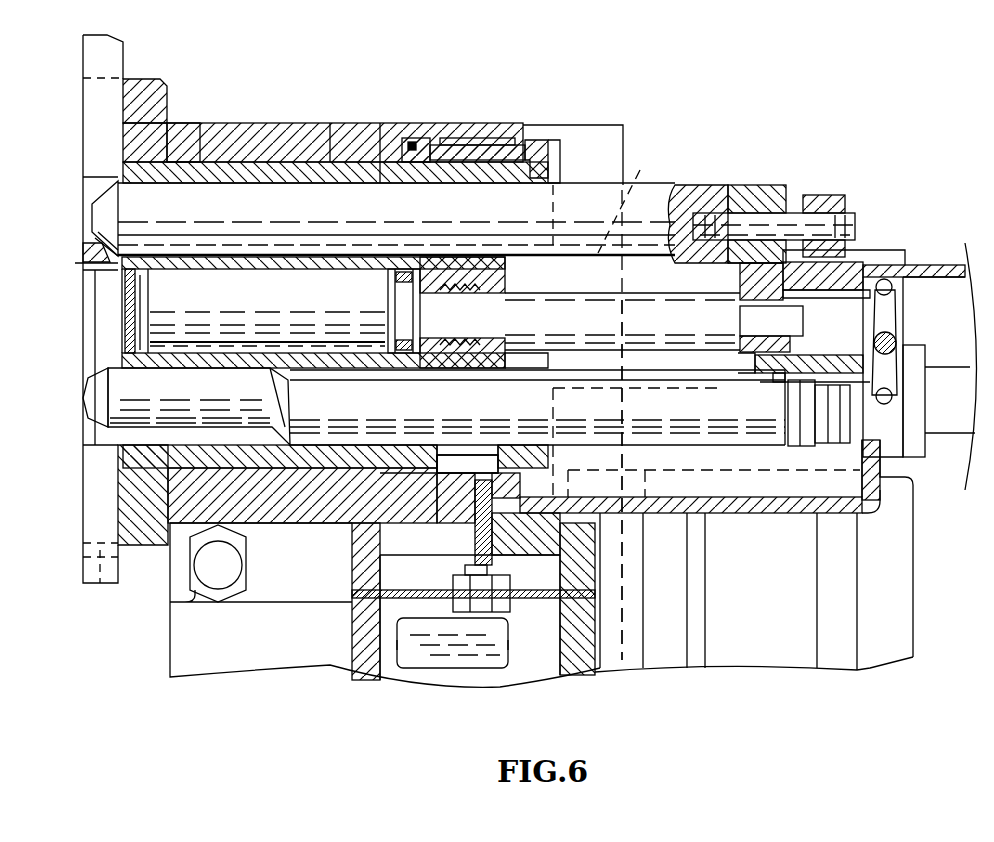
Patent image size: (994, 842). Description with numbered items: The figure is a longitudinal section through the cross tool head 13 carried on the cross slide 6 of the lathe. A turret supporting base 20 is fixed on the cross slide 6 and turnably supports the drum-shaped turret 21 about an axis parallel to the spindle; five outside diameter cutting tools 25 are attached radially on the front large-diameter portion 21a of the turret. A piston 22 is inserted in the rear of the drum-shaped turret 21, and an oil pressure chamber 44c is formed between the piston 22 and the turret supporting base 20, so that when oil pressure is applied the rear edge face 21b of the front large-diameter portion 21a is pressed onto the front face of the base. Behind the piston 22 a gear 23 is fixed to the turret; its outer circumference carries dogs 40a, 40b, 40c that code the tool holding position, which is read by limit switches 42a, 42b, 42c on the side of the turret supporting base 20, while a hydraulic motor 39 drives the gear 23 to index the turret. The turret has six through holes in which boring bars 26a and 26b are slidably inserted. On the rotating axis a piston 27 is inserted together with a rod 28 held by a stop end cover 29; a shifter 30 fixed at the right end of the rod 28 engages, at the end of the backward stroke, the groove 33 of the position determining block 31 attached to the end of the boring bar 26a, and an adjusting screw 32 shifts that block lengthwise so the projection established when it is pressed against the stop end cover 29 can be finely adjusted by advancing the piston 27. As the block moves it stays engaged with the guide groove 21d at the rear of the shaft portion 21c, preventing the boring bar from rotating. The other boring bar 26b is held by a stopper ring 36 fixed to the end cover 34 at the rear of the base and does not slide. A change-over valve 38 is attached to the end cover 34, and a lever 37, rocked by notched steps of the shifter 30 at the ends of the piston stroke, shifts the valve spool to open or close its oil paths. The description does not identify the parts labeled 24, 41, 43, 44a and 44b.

The cross slide 6 is at (300, 660).
The cross tool head 13 is at (680, 124).
The turret supporting base 20 is at (305, 135).
The drum-shaped turret 21 is at (250, 160).
The front large-diameter portion 21a is at (135, 85).
The rear edge face 21b is at (180, 120).
The shaft portion 21c is at (358, 175).
The guide groove 21d is at (620, 215).
The piston 22 is at (470, 145).
The gear 23 is at (530, 160).
The retainer 24 is at (555, 165).
The outside diameter cutting tools 25 is at (90, 135).
The boring bar 26a is at (93, 206).
The boring bar 26b is at (110, 398).
The piston 27 is at (395, 305).
The rod 28 is at (540, 300).
The stop end cover 29 is at (515, 360).
The shifter 30 is at (855, 268).
The position determining block 31 is at (760, 200).
The adjusting screw 32 is at (815, 200).
The groove 33 is at (745, 235).
The end cover 34 is at (880, 508).
The stopper ring 36 is at (800, 352).
The lever 37 is at (895, 310).
The change-over valve 38 is at (945, 385).
The hydraulic motor 39 is at (890, 590).
The dog 40a is at (460, 470).
The dog 40b is at (340, 500).
The dog 40c is at (390, 500).
The plate 41 is at (500, 568).
The limit switch 42a is at (440, 640).
The limit switch 42b is at (470, 704).
The limit switch 42c is at (520, 704).
The center line 43 is at (620, 587).
The tube 44a is at (275, 314).
The tube fitting 44b is at (425, 350).
The oil pressure chamber 44c is at (415, 140).